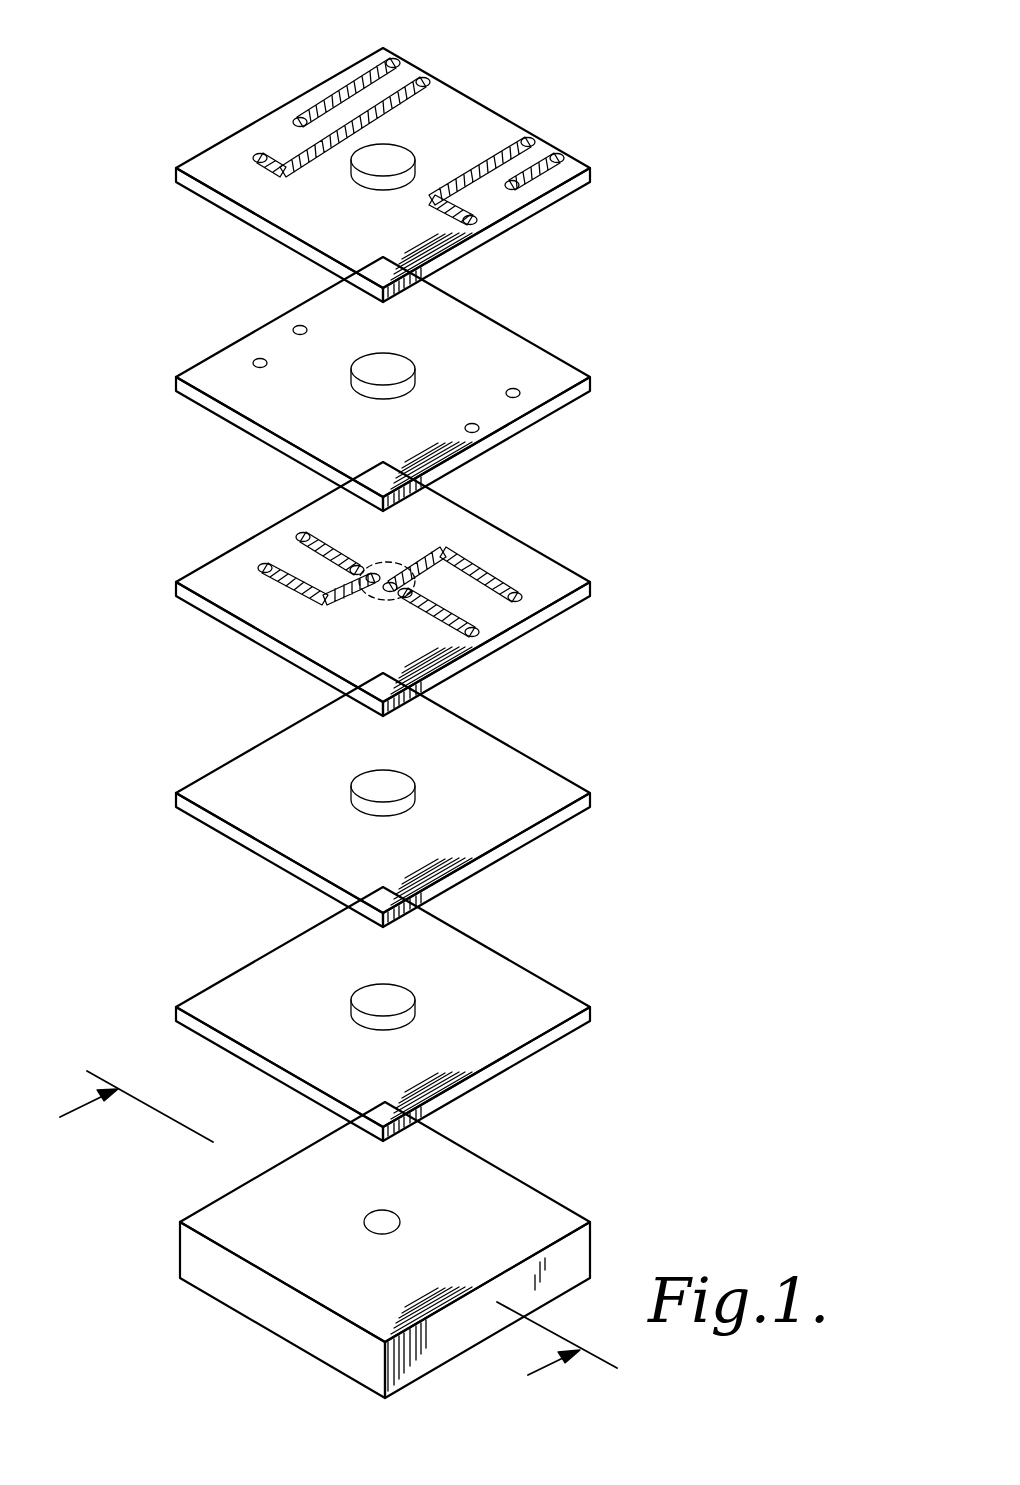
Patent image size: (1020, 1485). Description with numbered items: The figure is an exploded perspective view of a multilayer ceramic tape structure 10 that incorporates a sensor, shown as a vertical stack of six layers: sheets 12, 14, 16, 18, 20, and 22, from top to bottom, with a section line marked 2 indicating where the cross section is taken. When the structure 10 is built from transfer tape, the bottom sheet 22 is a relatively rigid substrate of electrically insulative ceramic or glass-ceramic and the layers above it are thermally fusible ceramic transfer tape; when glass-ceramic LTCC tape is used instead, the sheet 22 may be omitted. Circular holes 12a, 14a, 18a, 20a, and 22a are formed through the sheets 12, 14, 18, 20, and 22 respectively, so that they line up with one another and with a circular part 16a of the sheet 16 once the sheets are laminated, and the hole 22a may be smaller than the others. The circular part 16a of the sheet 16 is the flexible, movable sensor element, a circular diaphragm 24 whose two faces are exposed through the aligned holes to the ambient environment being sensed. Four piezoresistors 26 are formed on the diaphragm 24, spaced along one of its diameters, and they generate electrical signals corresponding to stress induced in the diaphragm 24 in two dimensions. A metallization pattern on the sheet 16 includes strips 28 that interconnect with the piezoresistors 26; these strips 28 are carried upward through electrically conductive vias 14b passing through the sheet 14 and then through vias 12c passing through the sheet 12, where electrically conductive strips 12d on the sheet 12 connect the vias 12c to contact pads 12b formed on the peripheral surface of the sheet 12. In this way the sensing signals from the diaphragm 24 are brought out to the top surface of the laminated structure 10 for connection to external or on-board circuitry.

The multilayer ceramic tape structure 10 is at (166, 338).
The sheet 12 is at (245, 188).
The circular hole 12a is at (405, 160).
The contact pads 12b is at (424, 77).
The vias 12c is at (300, 117).
The electrically conductive strips 12d is at (361, 118).
The sheet 14 is at (550, 362).
The circular hole 14a is at (360, 386).
The electrically conductive vias 14b is at (260, 358).
The sheet 16 is at (215, 598).
The circular part 16a is at (403, 546).
The sheet 18 is at (265, 820).
The circular hole 18a is at (405, 802).
The sheet 20 is at (470, 1060).
The circular hole 20a is at (368, 1015).
The sheet 22 is at (266, 1254).
The circular hole 22a is at (385, 1220).
The circular diaphragm 24 is at (393, 595).
The piezoresistors 26 is at (357, 562).
The strips 28 is at (265, 562).
The section line 2- 2 is at (338, 1216).